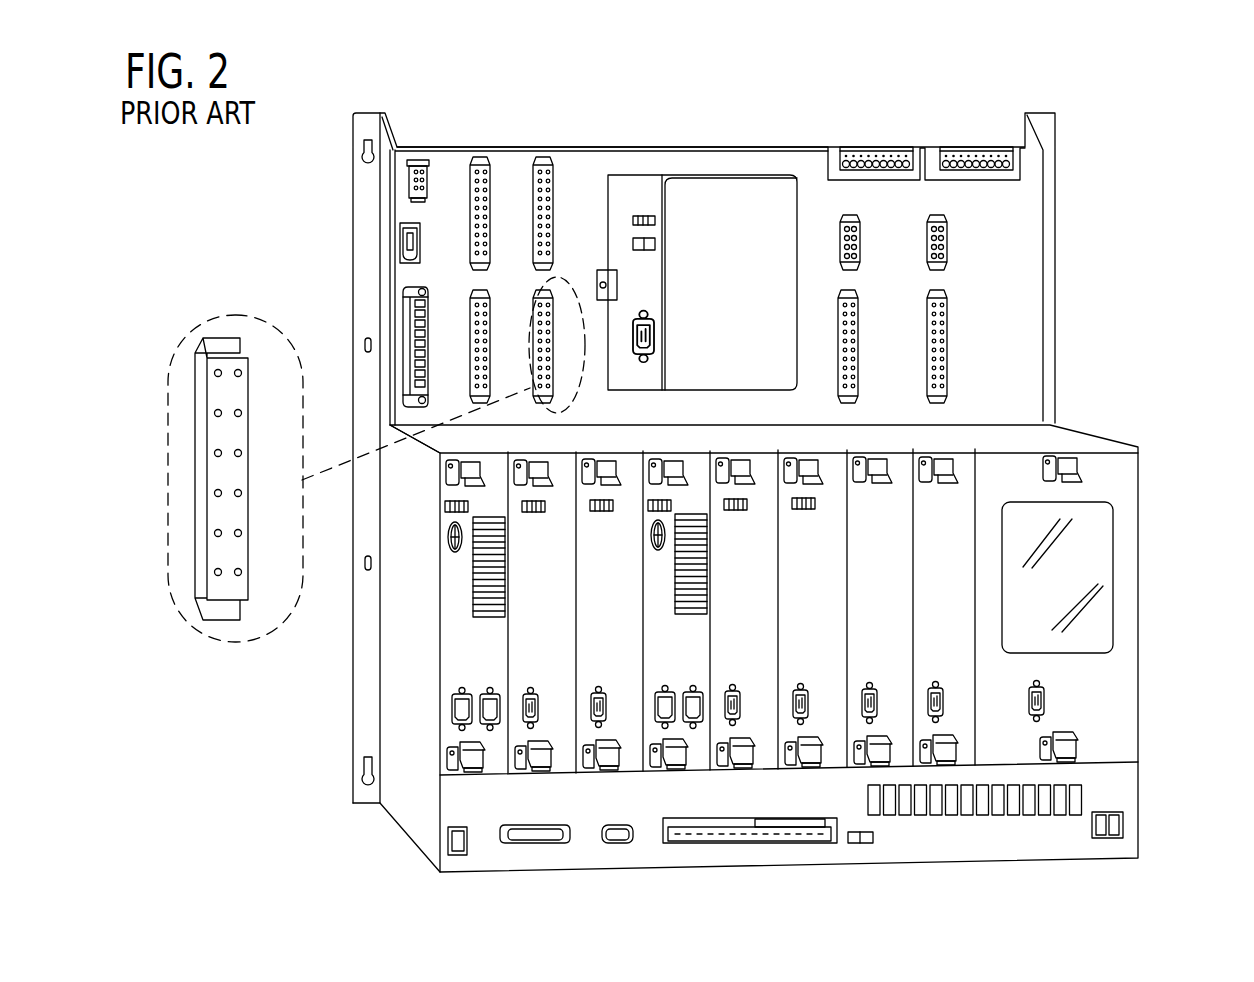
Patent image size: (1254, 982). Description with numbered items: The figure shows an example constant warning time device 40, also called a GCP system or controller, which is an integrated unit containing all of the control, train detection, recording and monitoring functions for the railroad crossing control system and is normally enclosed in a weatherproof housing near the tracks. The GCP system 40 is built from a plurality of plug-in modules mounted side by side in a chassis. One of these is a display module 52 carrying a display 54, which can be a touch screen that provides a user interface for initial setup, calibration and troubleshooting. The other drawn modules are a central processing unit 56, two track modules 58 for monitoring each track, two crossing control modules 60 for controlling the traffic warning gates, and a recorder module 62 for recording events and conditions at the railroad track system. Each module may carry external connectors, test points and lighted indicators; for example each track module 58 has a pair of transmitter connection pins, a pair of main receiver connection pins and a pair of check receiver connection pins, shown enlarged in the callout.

The constant warning time device 40 is at (1128, 132).
The display module 52 is at (1108, 687).
The display 54 is at (1080, 558).
The central processing unit 56 is at (490, 674).
The track module 58 is at (557, 634).
The crossing control module 60 is at (895, 633).
The recorder module 62 is at (1108, 793).